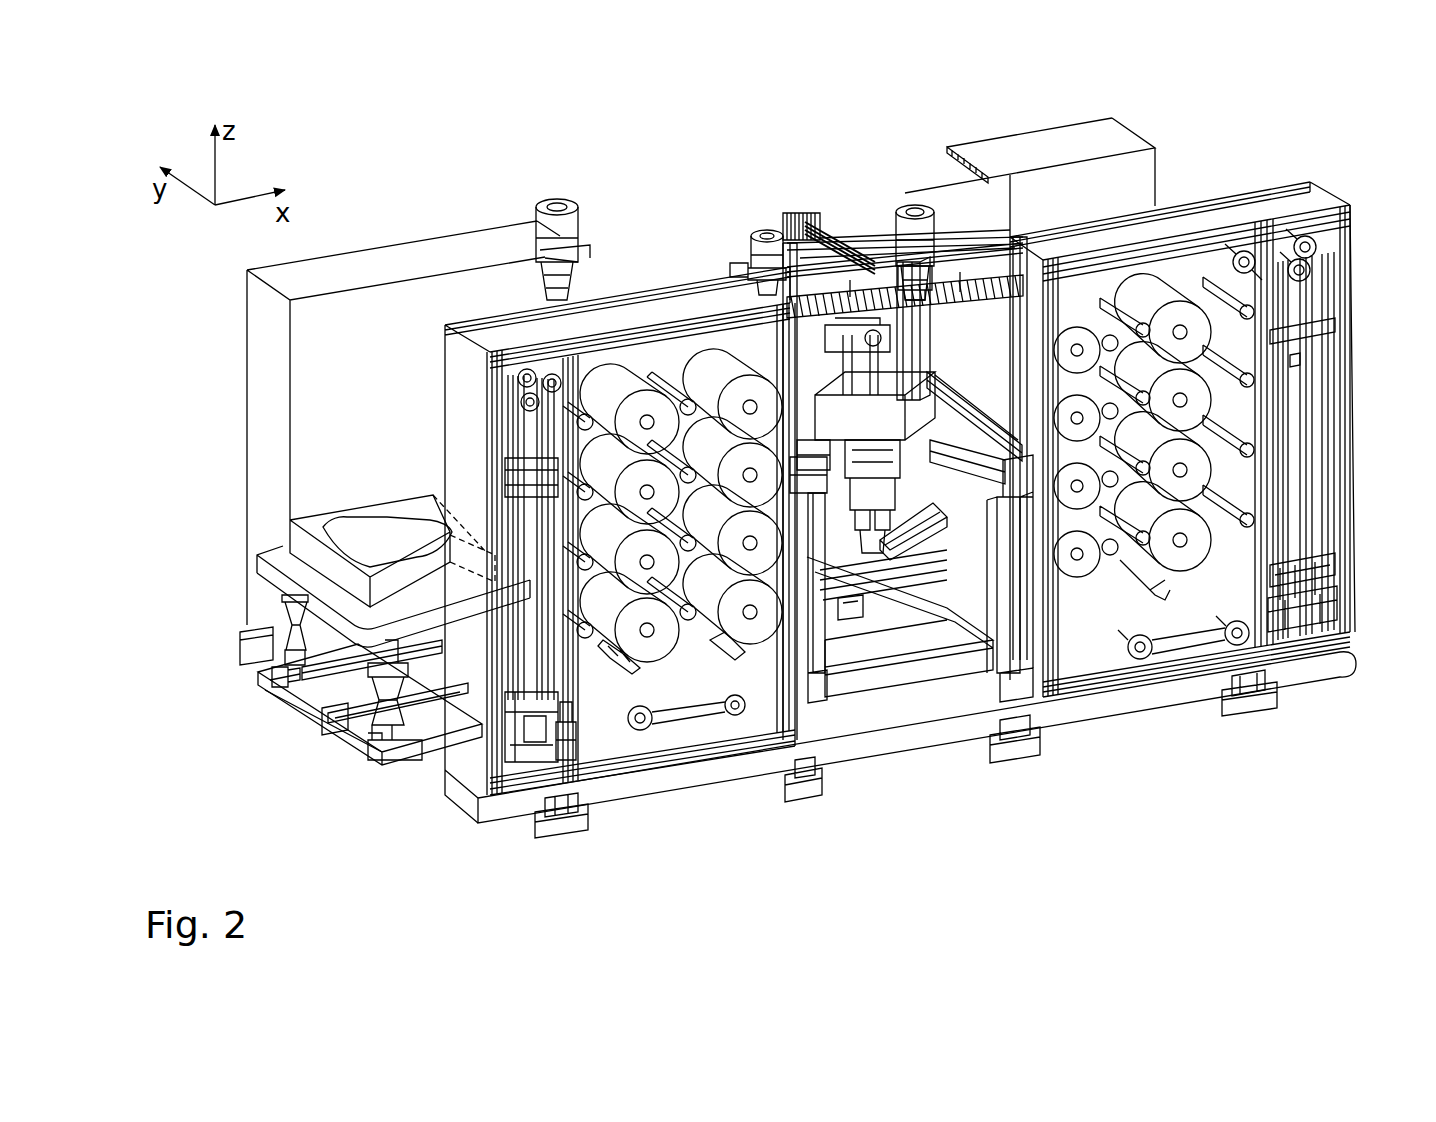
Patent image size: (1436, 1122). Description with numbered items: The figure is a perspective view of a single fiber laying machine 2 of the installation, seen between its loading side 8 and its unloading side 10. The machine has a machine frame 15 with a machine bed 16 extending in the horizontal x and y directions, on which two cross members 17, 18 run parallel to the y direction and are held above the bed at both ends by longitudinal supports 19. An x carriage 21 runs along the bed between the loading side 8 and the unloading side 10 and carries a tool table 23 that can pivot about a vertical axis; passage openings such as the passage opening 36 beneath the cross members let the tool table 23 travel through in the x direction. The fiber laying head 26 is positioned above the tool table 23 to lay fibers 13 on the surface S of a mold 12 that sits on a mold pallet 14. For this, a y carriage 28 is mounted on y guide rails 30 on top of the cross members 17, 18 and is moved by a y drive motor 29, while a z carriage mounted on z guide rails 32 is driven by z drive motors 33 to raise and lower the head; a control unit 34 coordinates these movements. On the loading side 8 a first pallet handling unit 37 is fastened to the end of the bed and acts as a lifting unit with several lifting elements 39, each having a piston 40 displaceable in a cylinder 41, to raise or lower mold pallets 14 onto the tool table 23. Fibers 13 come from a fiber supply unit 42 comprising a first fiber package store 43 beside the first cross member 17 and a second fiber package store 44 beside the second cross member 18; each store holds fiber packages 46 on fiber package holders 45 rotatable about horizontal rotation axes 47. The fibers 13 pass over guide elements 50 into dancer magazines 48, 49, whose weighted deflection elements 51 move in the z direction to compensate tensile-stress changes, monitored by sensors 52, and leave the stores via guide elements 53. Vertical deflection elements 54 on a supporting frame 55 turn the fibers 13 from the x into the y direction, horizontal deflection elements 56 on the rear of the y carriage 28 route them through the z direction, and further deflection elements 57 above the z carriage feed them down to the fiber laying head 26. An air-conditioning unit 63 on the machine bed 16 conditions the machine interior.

The fiber laying machine 2 is at (1028, 122).
The loading side 8 is at (166, 756).
The unloading side 10 is at (1384, 354).
The mold 12 is at (290, 532).
The fibers 13 is at (835, 322).
The mold pallet 14 is at (277, 553).
The machine frame 15 is at (1357, 653).
The machine bed 16 is at (1287, 677).
The first cross member 17 is at (812, 520).
The second cross member 18 is at (1018, 482).
The longitudinal supports 19 is at (1013, 667).
The x carriage 21 is at (875, 558).
The tool table 23 is at (846, 612).
The fiber laying head 26 is at (880, 612).
The y carriage 28 is at (915, 212).
The y drive motor 29 is at (557, 212).
The y guide rails 30 is at (985, 406).
The z guide rails 32 is at (920, 300).
The z drive motors 33 is at (763, 233).
The control unit 34 is at (368, 310).
The passage opening 36 is at (933, 497).
The first pallet handling unit 37 is at (402, 653).
The lifting elements 39 is at (283, 632).
The piston 40 is at (285, 682).
The cylinder 41 is at (378, 703).
The fiber supply unit 42 is at (1228, 192).
The first fiber package store 43 is at (634, 314).
The second fiber package store 44 is at (1277, 205).
The fiber package holders 45 is at (620, 643).
The fiber packages 46 is at (560, 740).
The horizontal rotation axis 47 is at (645, 633).
The dancer magazine 48 is at (515, 738).
The dancer magazine 49 is at (1307, 487).
The guide elements 50 is at (1237, 633).
The deflection elements 51 is at (1280, 597).
The sensors 52 is at (1290, 603).
The guide elements 53 is at (1250, 267).
The deflection elements 54 is at (880, 268).
The supporting frame 55 is at (985, 258).
The deflection elements 56 is at (817, 230).
The deflection elements 57 is at (810, 332).
The air-conditioning unit 63 is at (1130, 143).
The surface S is at (337, 520).